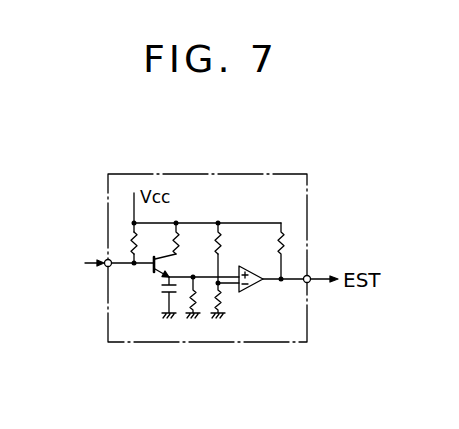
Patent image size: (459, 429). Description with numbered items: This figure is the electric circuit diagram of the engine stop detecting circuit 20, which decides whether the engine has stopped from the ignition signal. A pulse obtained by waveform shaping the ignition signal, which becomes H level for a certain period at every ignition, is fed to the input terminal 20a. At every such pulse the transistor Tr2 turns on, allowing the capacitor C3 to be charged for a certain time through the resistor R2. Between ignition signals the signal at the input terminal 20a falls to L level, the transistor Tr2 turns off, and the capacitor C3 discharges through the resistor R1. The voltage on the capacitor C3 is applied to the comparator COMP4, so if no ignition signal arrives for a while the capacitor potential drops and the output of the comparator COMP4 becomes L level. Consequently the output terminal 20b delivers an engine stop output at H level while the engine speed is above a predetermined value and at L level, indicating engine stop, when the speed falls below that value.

The engine stop detecting circuit 20 is at (308, 209).
The input terminal 20a is at (106, 260).
The output terminal 20b is at (311, 277).
The transistor Tr2 is at (153, 269).
The resistor R2 is at (177, 245).
The capacitor C3 is at (162, 290).
The resistor R1 is at (196, 299).
The comparator COMP4 is at (250, 266).